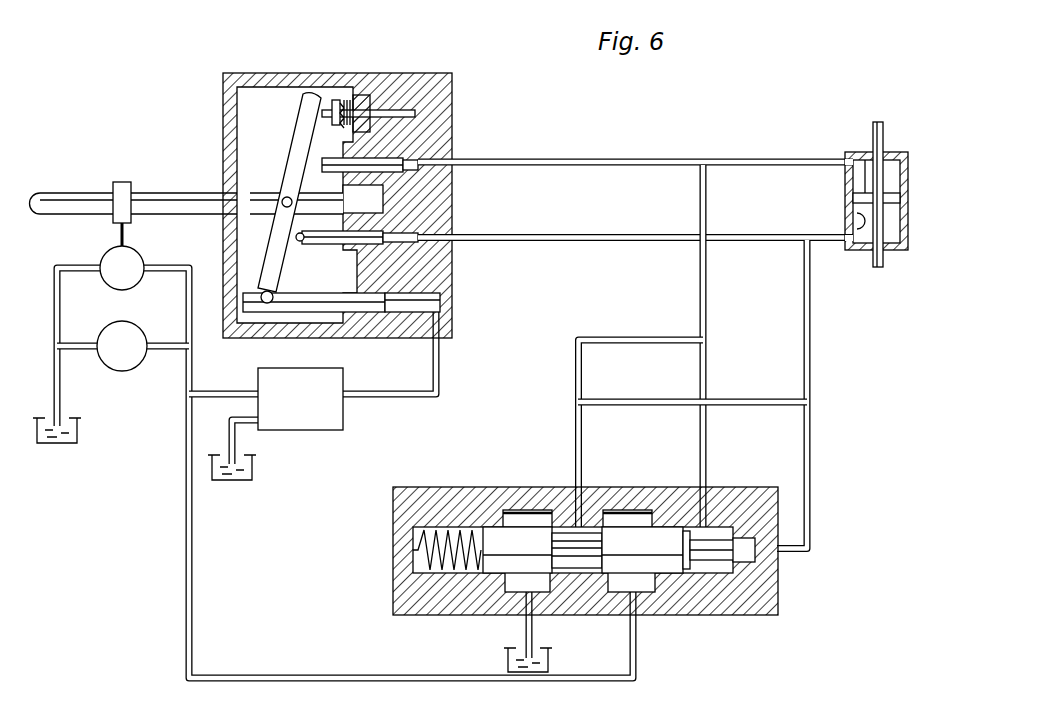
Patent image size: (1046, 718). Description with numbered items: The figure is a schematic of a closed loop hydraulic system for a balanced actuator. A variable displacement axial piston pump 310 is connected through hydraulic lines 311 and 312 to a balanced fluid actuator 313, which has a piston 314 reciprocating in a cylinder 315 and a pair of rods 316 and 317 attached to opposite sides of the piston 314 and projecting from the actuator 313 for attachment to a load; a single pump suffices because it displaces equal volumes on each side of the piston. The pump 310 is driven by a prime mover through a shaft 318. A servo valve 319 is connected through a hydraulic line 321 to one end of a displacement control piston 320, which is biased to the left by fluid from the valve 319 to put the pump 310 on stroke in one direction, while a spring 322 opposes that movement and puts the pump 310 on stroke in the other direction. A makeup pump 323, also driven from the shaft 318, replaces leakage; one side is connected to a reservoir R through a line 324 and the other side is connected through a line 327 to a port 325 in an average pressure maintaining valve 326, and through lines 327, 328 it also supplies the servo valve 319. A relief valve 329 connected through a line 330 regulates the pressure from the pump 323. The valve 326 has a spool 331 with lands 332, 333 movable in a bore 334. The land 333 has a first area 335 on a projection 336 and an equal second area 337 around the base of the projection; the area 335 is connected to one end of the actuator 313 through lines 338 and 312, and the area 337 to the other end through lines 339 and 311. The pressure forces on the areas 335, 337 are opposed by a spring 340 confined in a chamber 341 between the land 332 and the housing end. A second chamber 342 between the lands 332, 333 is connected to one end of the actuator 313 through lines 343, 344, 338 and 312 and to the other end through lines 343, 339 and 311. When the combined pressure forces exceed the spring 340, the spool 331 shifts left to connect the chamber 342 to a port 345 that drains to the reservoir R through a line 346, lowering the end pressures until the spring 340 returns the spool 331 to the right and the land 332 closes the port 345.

The variable displacement axial piston pump 310 is at (445, 76).
The hydraulic line 311 is at (590, 159).
The hydraulic line 312 is at (582, 235).
The balanced fluid actuator 313 is at (845, 155).
The piston 314 is at (853, 197).
The cylinder 315 is at (853, 222).
The rod 316 is at (884, 268).
The rod 317 is at (884, 130).
The shaft 318 is at (188, 192).
The servo valve 319 is at (322, 430).
The displacement control piston 320 is at (340, 312).
The hydraulic line 321 is at (442, 372).
The spring 322 is at (357, 95).
The makeup pump 323 is at (146, 262).
The line 324 is at (60, 298).
The port 325 is at (640, 600).
The average pressure maintaining valve 326 is at (778, 616).
The line 327 is at (328, 672).
The line 328 is at (226, 392).
The relief valve 329 is at (118, 372).
The line 330 is at (165, 352).
The spool 331 is at (582, 528).
The land 332 is at (500, 527).
The land 333 is at (655, 527).
The bore 334 is at (578, 575).
The first area 335 is at (760, 560).
The projection 336 is at (738, 540).
The second area 337 is at (688, 575).
The line 338 is at (810, 435).
The line 339 is at (706, 425).
The spring 340 is at (415, 550).
The chamber 341 is at (520, 590).
The second chamber 342 is at (530, 510).
The line 343 is at (576, 410).
The line 344 is at (640, 399).
The port 345 is at (535, 592).
The line 346 is at (525, 632).
The reservoir R is at (75, 442).